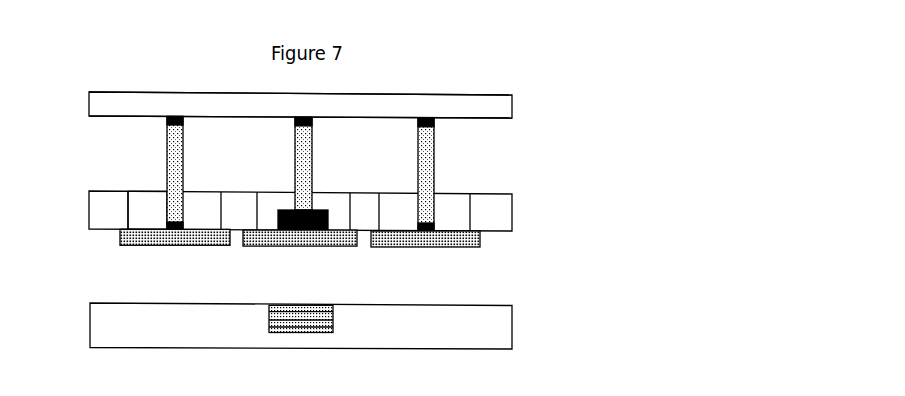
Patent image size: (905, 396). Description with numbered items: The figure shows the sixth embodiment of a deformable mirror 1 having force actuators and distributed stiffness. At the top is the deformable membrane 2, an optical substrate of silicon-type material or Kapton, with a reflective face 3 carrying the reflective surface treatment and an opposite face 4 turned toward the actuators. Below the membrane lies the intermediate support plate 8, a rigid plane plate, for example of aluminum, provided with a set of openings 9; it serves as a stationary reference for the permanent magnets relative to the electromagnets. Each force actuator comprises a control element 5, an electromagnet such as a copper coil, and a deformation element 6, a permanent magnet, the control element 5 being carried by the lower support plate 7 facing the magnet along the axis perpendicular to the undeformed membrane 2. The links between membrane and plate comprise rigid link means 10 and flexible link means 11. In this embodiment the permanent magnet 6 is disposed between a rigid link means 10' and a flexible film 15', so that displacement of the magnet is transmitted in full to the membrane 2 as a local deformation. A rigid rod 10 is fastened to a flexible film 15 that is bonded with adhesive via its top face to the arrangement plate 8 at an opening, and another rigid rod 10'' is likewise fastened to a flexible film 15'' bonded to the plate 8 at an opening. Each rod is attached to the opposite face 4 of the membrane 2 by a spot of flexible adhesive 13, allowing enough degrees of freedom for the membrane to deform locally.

The deformable mirror 1 is at (404, 86).
The deformable membrane 2 is at (329, 107).
The reflective face 3 is at (478, 96).
The opposite face 4 is at (478, 118).
The control element 5 is at (311, 306).
The deformation element 6 is at (302, 231).
The support plate 7 is at (330, 337).
The intermediate support plate 8 is at (304, 195).
The opening 9 is at (143, 200).
The rigid link means 10 is at (109, 145).
The rigid link means 10' is at (267, 173).
The rigid rod 10'' is at (389, 174).
The flexible link means 11 is at (358, 245).
The spot of flexible adhesive 13 is at (174, 117).
The flexible film 15 is at (184, 251).
The flexible film 15' is at (314, 251).
The flexible film 15'' is at (440, 253).